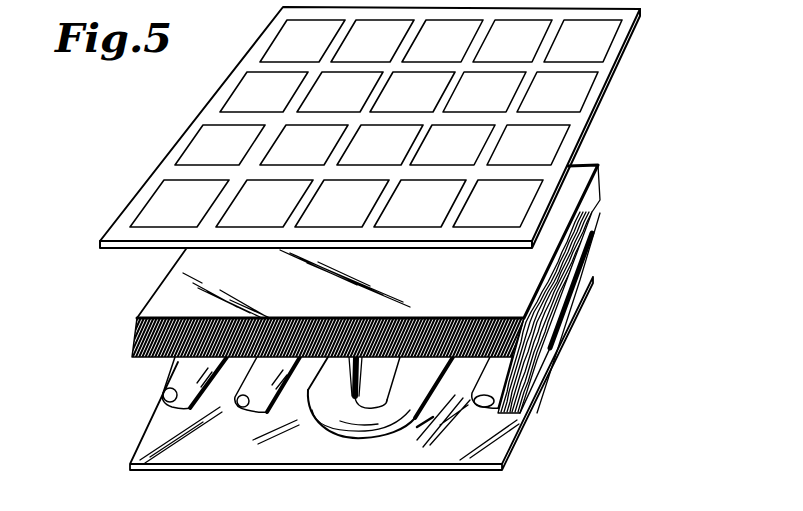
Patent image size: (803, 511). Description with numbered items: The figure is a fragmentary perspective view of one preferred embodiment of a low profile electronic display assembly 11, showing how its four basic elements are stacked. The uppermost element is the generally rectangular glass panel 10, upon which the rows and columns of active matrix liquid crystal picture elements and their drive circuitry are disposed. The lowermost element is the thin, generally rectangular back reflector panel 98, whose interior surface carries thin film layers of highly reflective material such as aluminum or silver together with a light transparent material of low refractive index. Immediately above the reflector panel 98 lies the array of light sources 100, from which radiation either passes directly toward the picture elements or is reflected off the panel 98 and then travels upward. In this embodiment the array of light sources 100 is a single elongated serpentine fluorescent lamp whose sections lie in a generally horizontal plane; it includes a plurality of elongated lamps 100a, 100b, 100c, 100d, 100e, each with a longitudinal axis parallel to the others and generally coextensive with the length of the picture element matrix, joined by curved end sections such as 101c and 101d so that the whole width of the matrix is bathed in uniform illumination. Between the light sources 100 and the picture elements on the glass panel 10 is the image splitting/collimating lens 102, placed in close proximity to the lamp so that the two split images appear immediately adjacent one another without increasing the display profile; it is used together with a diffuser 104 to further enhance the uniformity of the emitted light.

The low profile electronic display assembly 11 is at (95, 153).
The glass panel 10 is at (612, 56).
The diffuser 104 is at (581, 175).
The image splitting/collimating lens 102 is at (597, 208).
The curved end section 101d is at (605, 246).
The array of light sources 100 is at (564, 342).
The elongated lamp 100a is at (164, 390).
The elongated lamp 100b is at (242, 405).
The elongated lamp 100c is at (307, 403).
The elongated lamp 100d is at (413, 400).
The elongated lamp 100e is at (503, 408).
The curved end section 101c is at (360, 427).
The back reflector panel 98 is at (505, 461).